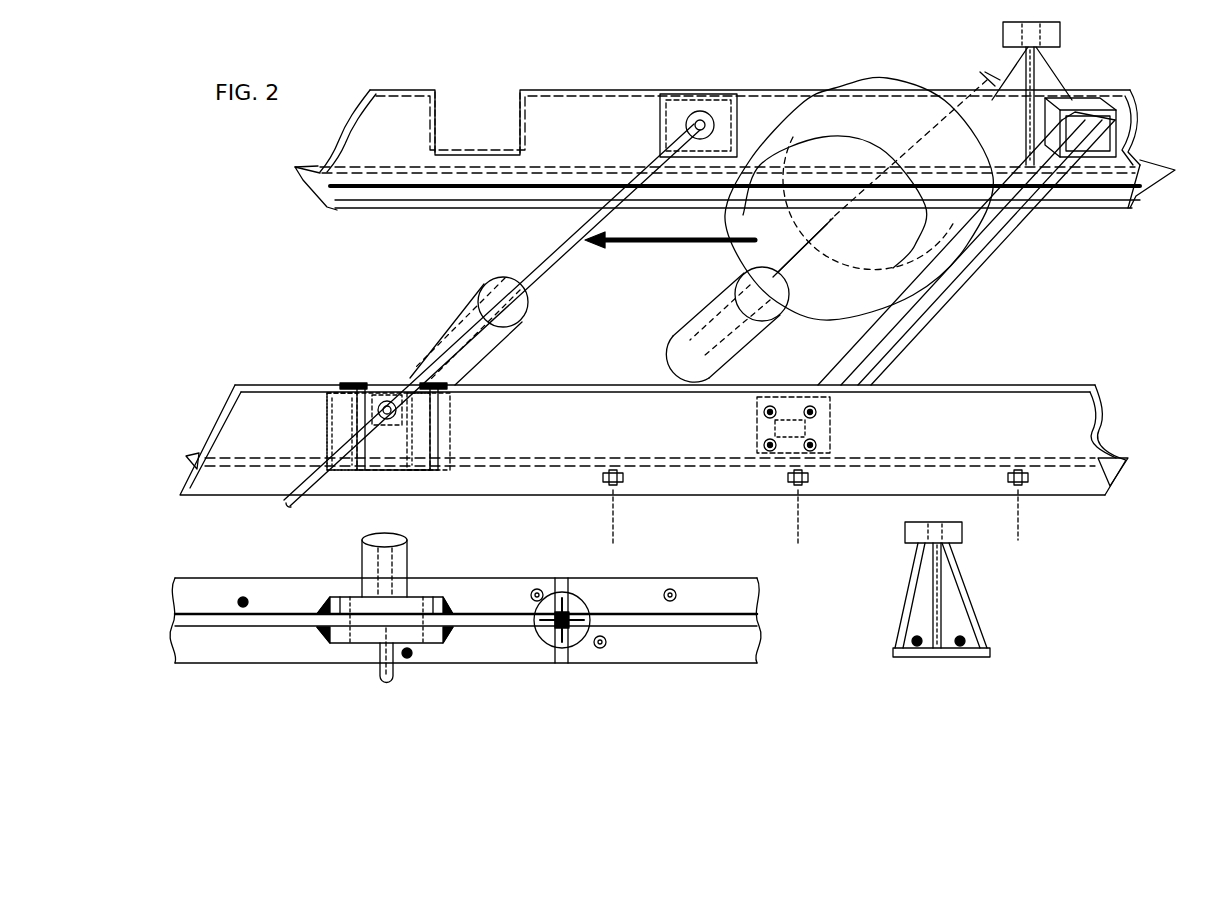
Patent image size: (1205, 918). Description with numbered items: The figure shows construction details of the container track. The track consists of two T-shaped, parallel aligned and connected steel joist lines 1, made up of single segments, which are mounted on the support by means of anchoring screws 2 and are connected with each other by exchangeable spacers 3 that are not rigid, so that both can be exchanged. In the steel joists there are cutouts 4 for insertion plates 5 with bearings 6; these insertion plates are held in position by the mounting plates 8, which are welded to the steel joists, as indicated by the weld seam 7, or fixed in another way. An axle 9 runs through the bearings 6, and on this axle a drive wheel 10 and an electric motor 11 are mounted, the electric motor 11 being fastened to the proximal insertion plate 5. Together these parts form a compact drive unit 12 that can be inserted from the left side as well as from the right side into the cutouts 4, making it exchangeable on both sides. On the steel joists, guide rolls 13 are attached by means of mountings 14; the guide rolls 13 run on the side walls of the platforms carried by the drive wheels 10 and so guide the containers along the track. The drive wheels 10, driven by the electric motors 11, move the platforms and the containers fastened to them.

The steel joist lines 1 is at (433, 98).
The anchoring screws 2 is at (1028, 483).
The spacers 3 is at (970, 282).
The cutouts 4 is at (492, 680).
The insertion plates 5 is at (722, 102).
The bearings 6 is at (382, 400).
The weld seam 7 is at (325, 600).
The mounting plates 8 is at (432, 456).
The axle 9 is at (640, 262).
The drive wheel 10 is at (823, 310).
The electric motor 11 is at (503, 333).
The drive unit 12 is at (790, 260).
The guide rolls 13 is at (1052, 36).
The guide roll mountings 14 is at (946, 628).